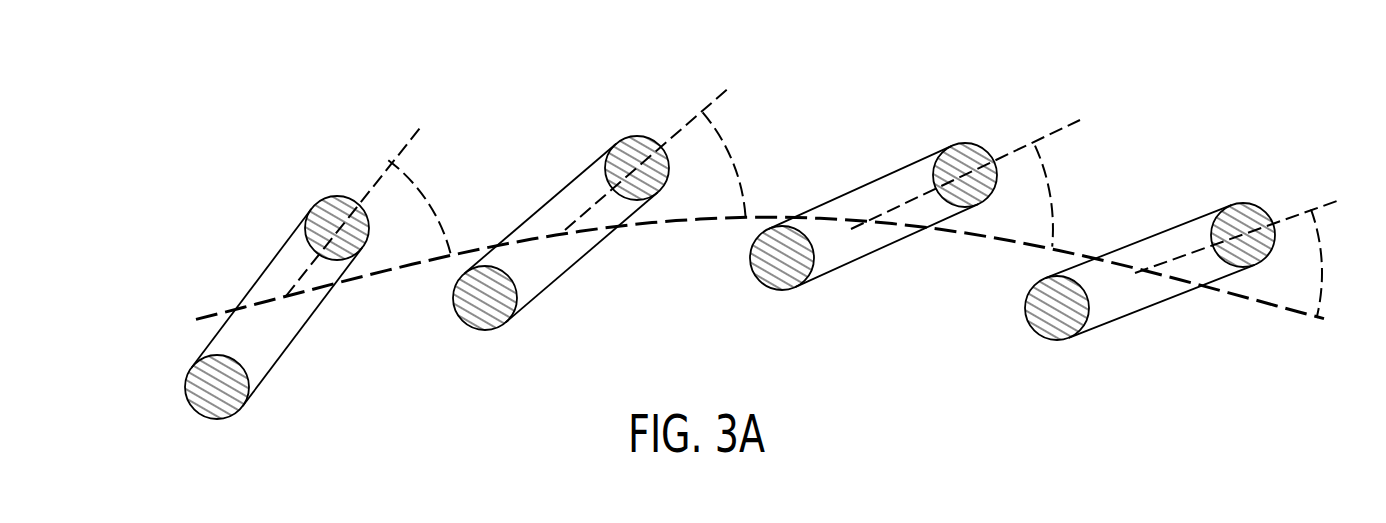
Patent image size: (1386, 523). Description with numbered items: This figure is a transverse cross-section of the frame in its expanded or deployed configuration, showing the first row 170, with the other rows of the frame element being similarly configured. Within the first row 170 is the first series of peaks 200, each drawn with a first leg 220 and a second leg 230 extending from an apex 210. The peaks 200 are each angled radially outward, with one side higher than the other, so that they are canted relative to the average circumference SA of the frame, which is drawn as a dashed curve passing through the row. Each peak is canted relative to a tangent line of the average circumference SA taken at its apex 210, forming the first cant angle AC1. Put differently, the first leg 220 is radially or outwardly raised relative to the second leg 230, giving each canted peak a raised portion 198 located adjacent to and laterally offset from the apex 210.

The first row 170 is at (202, 220).
The first series of peaks 200 is at (300, 167).
The raised portion 198 is at (881, 185).
The apex 210 is at (852, 203).
The first leg 220 is at (932, 210).
The second leg 230 is at (852, 247).
The first cant angle AC1 is at (1068, 197).
The average circumference SA is at (1263, 300).